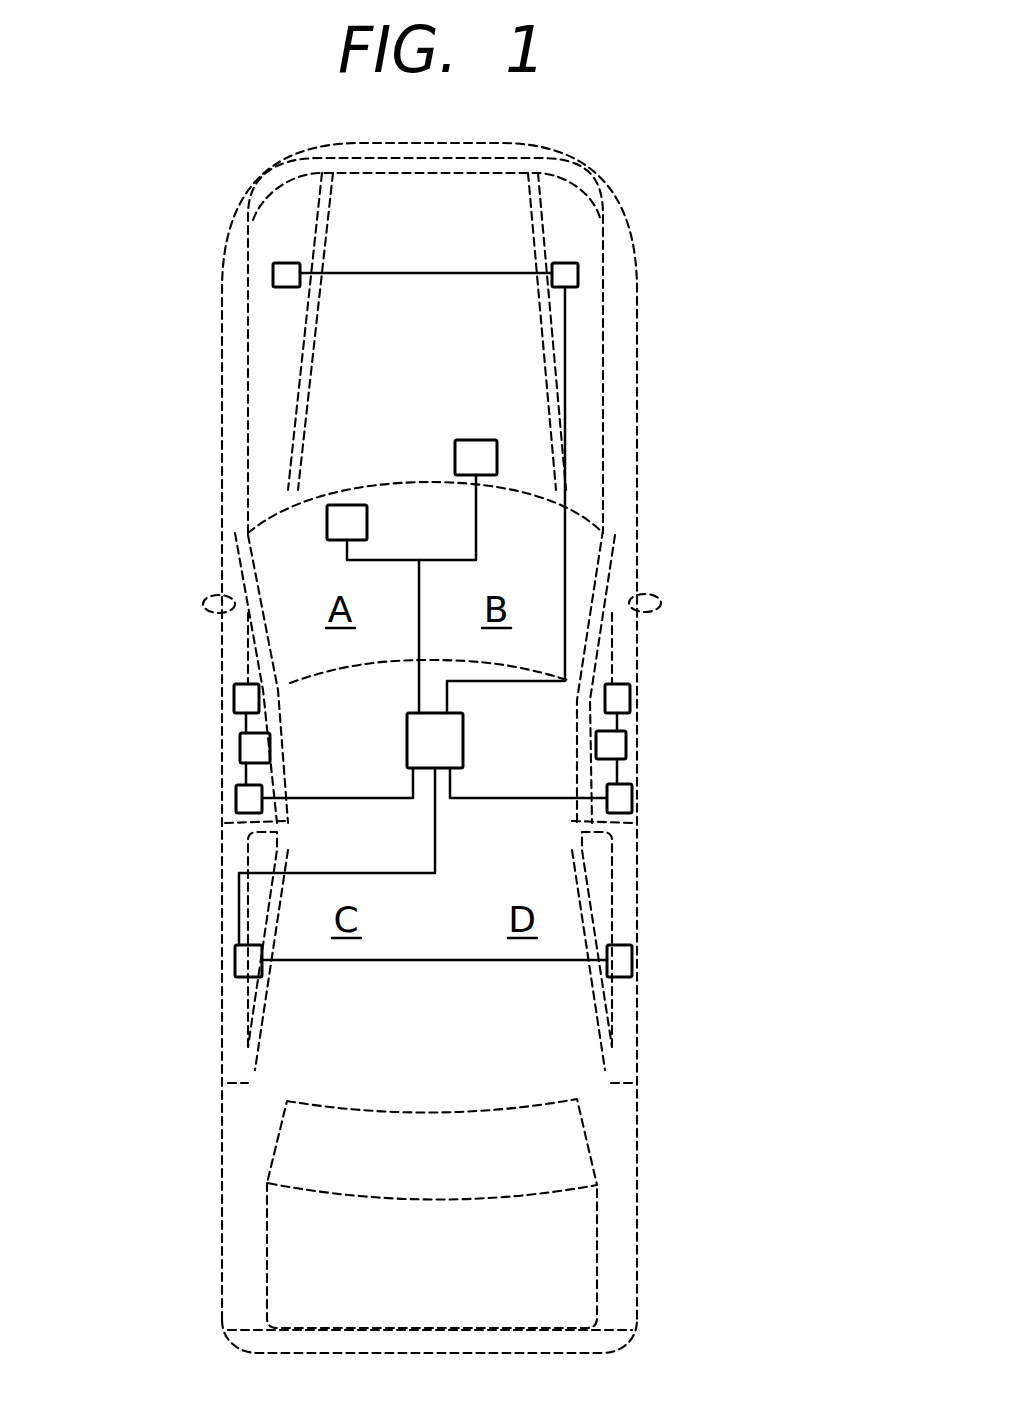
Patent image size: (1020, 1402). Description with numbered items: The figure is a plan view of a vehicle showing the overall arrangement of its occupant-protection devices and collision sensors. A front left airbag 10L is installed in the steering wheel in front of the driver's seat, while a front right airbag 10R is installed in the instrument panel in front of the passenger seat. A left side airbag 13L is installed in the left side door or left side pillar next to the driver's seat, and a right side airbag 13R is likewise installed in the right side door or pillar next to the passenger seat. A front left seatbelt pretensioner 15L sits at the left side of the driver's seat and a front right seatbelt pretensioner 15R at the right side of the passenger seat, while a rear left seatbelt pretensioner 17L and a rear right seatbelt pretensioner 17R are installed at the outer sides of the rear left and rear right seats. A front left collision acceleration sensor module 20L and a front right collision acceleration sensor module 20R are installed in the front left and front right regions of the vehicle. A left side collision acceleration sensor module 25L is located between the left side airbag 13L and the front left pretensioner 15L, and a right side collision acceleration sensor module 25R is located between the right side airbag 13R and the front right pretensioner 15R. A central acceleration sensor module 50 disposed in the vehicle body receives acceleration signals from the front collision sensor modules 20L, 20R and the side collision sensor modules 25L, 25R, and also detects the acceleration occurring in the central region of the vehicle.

The front left airbag 10L is at (347, 520).
The front right airbag 10R is at (476, 450).
The left side airbag 13L is at (246, 700).
The right side airbag 13R is at (618, 698).
The front left seatbelt pretensioner 15L is at (248, 798).
The front right seatbelt pretensioner 15R is at (620, 798).
The rear left seatbelt pretensioner 17L is at (248, 960).
The rear right seatbelt pretensioner 17R is at (620, 960).
The front left collision acceleration sensor module 20L is at (273, 273).
The front right collision acceleration sensor module 20R is at (578, 273).
The left side collision acceleration sensor module 25L is at (252, 748).
The right side collision acceleration sensor module 25R is at (612, 745).
The central acceleration sensor module 50 is at (419, 738).